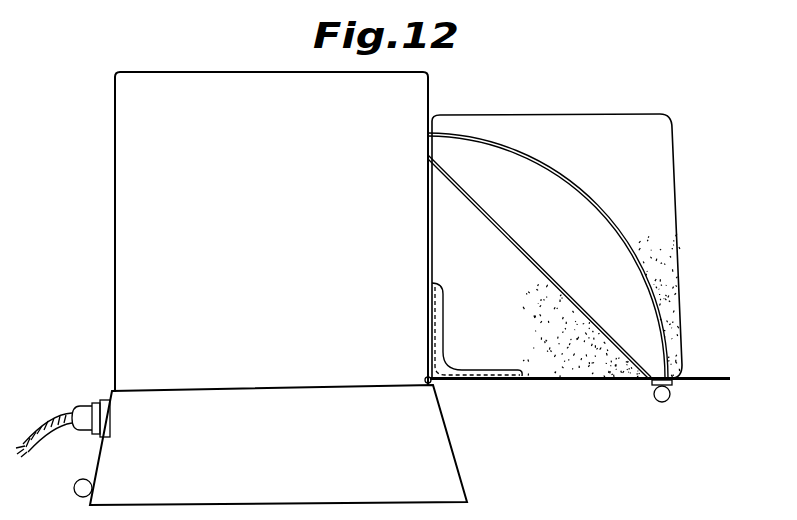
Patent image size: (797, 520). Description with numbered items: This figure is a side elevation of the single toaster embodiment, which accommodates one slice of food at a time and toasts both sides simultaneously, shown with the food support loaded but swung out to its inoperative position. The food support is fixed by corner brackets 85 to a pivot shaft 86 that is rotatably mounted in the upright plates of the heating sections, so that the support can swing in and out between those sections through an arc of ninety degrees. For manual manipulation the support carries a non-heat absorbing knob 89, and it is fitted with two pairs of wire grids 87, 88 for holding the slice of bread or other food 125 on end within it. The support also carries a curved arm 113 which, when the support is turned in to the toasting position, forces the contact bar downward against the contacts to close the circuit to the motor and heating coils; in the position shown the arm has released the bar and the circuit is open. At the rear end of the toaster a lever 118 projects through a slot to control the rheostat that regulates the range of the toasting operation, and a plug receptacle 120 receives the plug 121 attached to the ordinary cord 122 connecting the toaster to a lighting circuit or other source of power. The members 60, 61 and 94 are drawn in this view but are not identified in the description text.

The base member 60 is at (278, 445).
The front panel 61 is at (271, 232).
The corner brackets 85 is at (446, 359).
The pivot shaft 86 is at (432, 383).
The wire grids 87 is at (577, 188).
The wire grids 88 is at (522, 251).
The non-heat absorbing knob 89 is at (670, 401).
The bottom rail 94 is at (592, 382).
The curved arm 113 is at (432, 297).
The lever 118 is at (75, 495).
The plug receptacle 120 is at (103, 399).
The plug 121 is at (80, 426).
The cord 122 is at (40, 426).
The food 125 is at (676, 252).